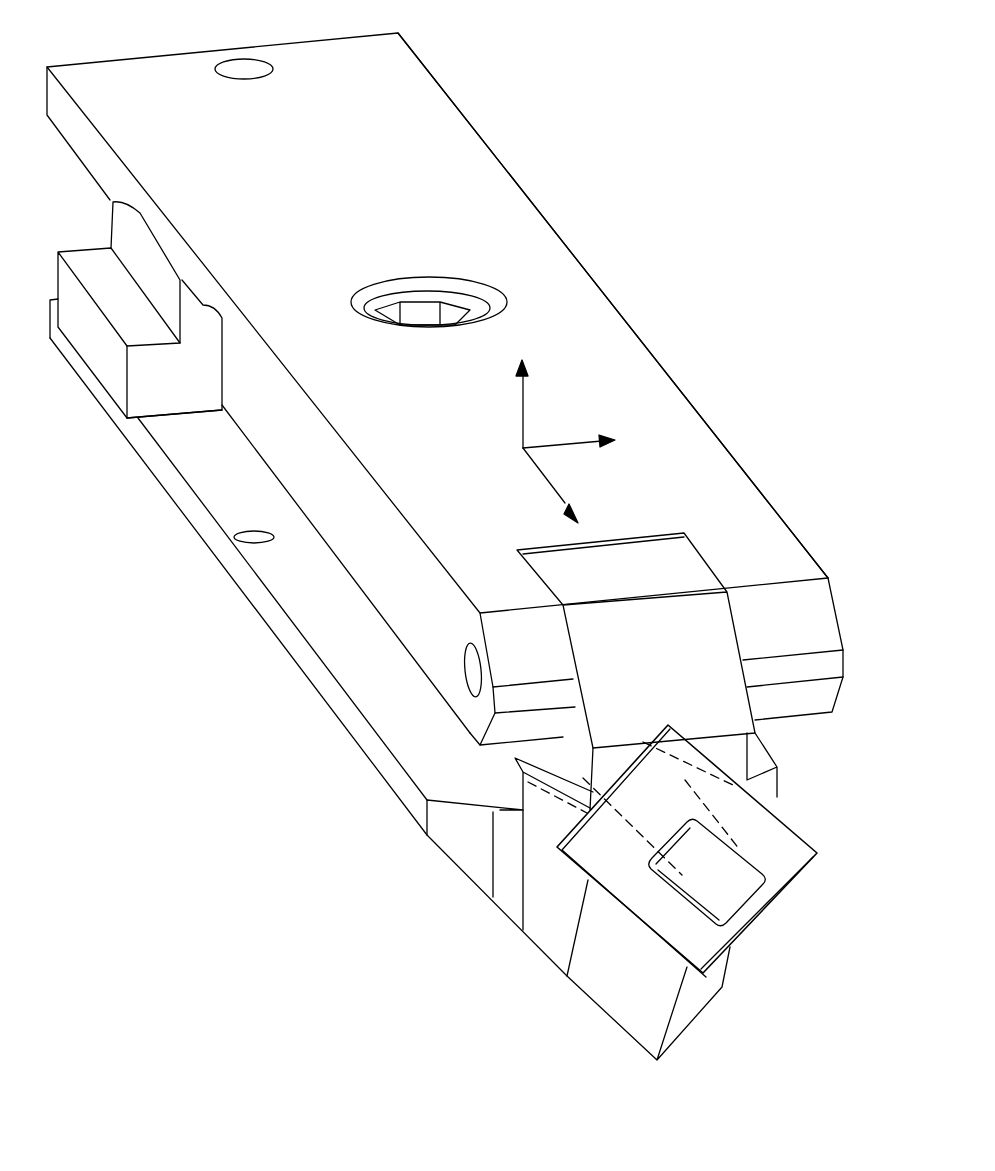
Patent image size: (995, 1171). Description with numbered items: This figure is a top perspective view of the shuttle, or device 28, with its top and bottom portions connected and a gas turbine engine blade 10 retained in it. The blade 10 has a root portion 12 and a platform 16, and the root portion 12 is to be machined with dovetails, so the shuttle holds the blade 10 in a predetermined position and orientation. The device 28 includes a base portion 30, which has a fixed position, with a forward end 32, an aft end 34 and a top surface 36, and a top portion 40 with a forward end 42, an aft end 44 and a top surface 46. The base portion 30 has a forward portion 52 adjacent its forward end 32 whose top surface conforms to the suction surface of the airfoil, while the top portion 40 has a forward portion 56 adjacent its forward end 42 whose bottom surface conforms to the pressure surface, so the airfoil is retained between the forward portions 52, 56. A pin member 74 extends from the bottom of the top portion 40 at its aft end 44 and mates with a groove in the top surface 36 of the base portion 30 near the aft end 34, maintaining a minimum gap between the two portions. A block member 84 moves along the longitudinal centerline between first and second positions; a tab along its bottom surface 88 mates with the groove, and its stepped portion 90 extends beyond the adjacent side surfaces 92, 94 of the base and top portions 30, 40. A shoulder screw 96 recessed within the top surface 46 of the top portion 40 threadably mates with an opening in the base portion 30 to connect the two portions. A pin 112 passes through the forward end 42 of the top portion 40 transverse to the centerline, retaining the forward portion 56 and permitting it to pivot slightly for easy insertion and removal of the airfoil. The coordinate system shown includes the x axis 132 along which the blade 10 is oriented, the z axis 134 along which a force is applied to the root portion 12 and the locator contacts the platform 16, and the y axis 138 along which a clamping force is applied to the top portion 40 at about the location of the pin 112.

The blade 10 is at (784, 901).
The root portion 12 is at (707, 872).
The platform 16 is at (794, 838).
The device 28 is at (712, 332).
The base portion 30 is at (427, 838).
The forward end 32 is at (507, 895).
The aft end 34 is at (44, 320).
The top surface 36 is at (405, 738).
The top portion 40 is at (738, 453).
The forward end 42 is at (793, 649).
The aft end 44 is at (415, 46).
The top surface 46 is at (685, 418).
The forward portion 52 is at (551, 917).
The forward portion 56 is at (647, 671).
The pin member 74 is at (243, 66).
The block member 84 is at (190, 370).
The bottom surface 88 is at (165, 419).
The stepped portion 90 is at (85, 262).
The side surface 92 is at (228, 555).
The side surface 94 is at (355, 535).
The shoulder screw 96 is at (393, 312).
The pin 112 is at (466, 668).
The x axis 132 is at (572, 448).
The z axis 134 is at (543, 482).
The y axis 138 is at (523, 397).